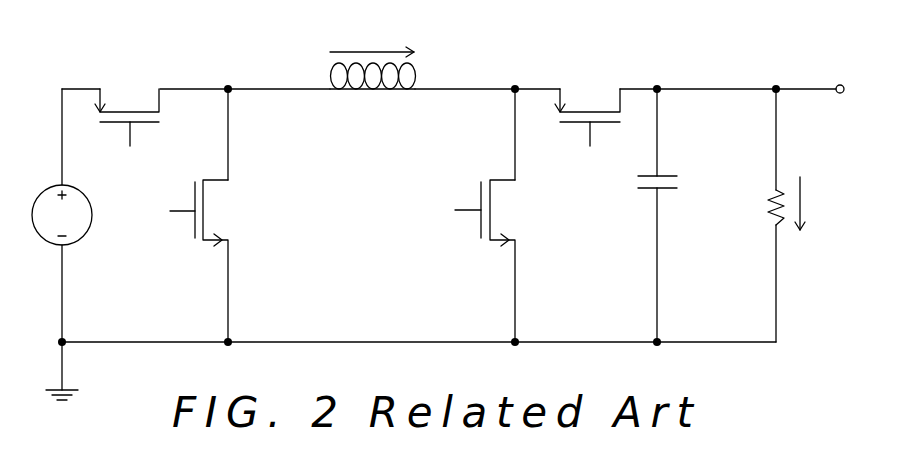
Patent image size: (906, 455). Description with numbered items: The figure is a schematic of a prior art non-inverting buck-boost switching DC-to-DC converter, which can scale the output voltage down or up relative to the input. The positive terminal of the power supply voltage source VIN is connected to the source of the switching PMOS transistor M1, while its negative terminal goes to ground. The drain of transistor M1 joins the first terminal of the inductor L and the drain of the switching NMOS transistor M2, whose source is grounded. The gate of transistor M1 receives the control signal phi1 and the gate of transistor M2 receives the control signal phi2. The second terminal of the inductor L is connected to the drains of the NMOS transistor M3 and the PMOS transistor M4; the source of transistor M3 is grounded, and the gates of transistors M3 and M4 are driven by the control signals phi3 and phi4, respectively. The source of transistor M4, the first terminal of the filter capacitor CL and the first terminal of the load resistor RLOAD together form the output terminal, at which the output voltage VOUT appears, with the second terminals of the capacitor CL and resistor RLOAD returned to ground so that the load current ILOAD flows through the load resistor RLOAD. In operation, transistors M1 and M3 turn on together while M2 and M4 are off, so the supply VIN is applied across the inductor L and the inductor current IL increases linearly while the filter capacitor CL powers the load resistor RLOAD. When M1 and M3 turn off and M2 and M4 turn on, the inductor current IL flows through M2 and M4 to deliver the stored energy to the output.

The power supply voltage source VIN is at (62, 215).
The switching PMOS transistor M1 is at (127, 117).
The switching NMOS transistor M2 is at (205, 215).
The NMOS transistor M3 is at (490, 215).
The PMOS transistor M4 is at (587, 117).
The control signal phi1 is at (123, 154).
The control signal phi2 is at (148, 214).
The control signal phi3 is at (438, 213).
The control signal phi4 is at (585, 154).
The inductor L is at (373, 92).
The inductor current IL is at (372, 43).
The filter capacitor CL is at (672, 215).
The load resistor RLOAD is at (743, 215).
The load current ILOAD is at (823, 203).
The output voltage VOUT is at (834, 92).